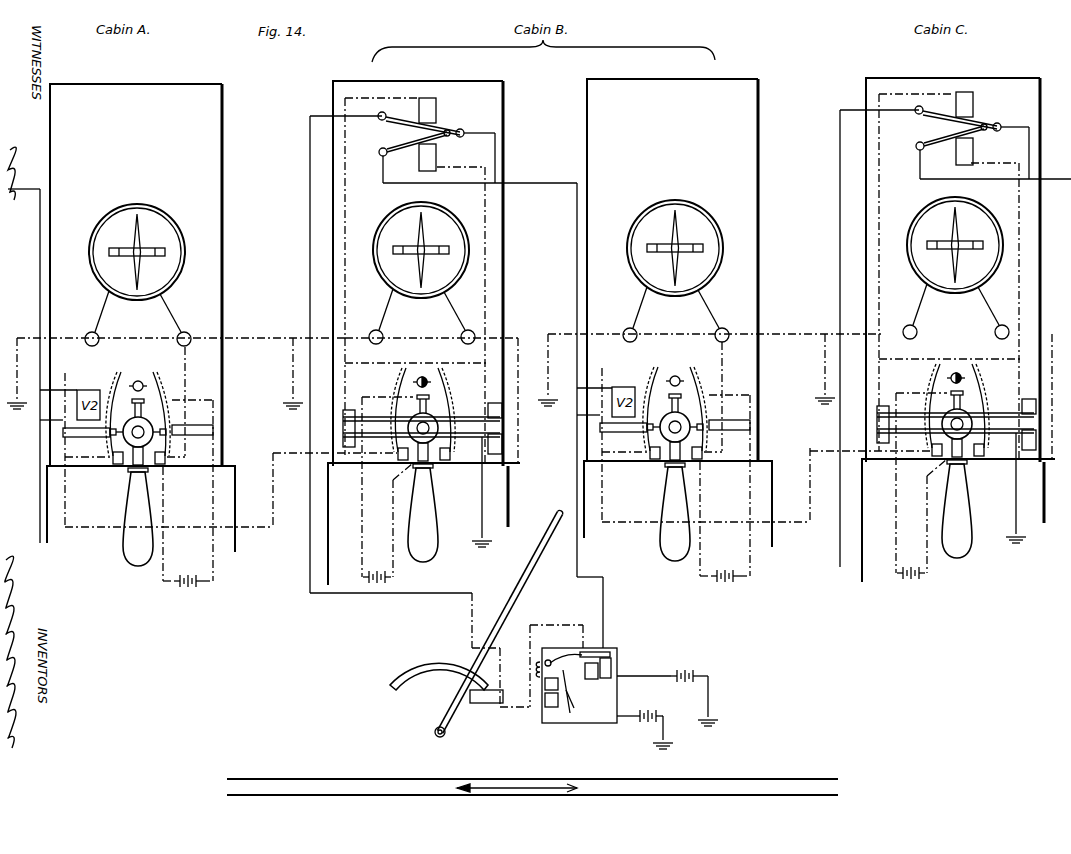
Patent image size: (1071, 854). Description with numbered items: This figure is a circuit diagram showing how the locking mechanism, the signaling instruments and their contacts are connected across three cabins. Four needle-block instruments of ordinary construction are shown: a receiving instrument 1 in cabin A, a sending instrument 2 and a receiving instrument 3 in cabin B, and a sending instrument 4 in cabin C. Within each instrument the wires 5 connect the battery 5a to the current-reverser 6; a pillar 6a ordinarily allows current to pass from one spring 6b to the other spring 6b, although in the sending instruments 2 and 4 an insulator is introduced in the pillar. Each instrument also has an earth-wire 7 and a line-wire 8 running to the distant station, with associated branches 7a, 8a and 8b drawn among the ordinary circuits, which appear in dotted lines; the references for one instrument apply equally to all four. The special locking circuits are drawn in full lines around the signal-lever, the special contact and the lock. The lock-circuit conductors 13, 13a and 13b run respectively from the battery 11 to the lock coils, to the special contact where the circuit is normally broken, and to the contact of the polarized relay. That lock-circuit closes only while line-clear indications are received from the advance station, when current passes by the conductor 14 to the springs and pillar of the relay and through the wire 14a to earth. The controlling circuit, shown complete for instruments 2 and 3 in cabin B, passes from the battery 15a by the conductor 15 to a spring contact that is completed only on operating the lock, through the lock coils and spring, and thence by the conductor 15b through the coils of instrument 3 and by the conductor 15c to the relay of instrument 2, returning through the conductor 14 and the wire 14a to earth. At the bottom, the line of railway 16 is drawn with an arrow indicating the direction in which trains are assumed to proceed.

The receiving instrument 1 is at (100, 445).
The sending instrument 2 is at (456, 355).
The receiving instrument 3 is at (709, 496).
The sending instrument 4 is at (907, 492).
The wires 5 is at (200, 399).
The battery 5a is at (188, 588).
The current-reverser 6 is at (139, 482).
The pillar 6a is at (139, 381).
The springs 6b is at (128, 365).
The earth-wire 7 is at (194, 369).
The ground wire 7a is at (293, 340).
The line-wire 8 is at (66, 481).
The branch wire 8a is at (346, 232).
The branch wire 8b is at (468, 166).
The battery 11 is at (685, 668).
The conductor of lock-circuit 13 is at (638, 676).
The conductor of lock-circuit 13a is at (572, 625).
The conductor of lock-circuit 13b is at (309, 157).
The conductor 14 is at (504, 258).
The wire 14a is at (481, 497).
The conductor 15 is at (624, 715).
The battery 15a is at (650, 708).
The conductor 15b is at (604, 617).
The conductor 15c is at (386, 185).
The line of railway 16 is at (532, 787).